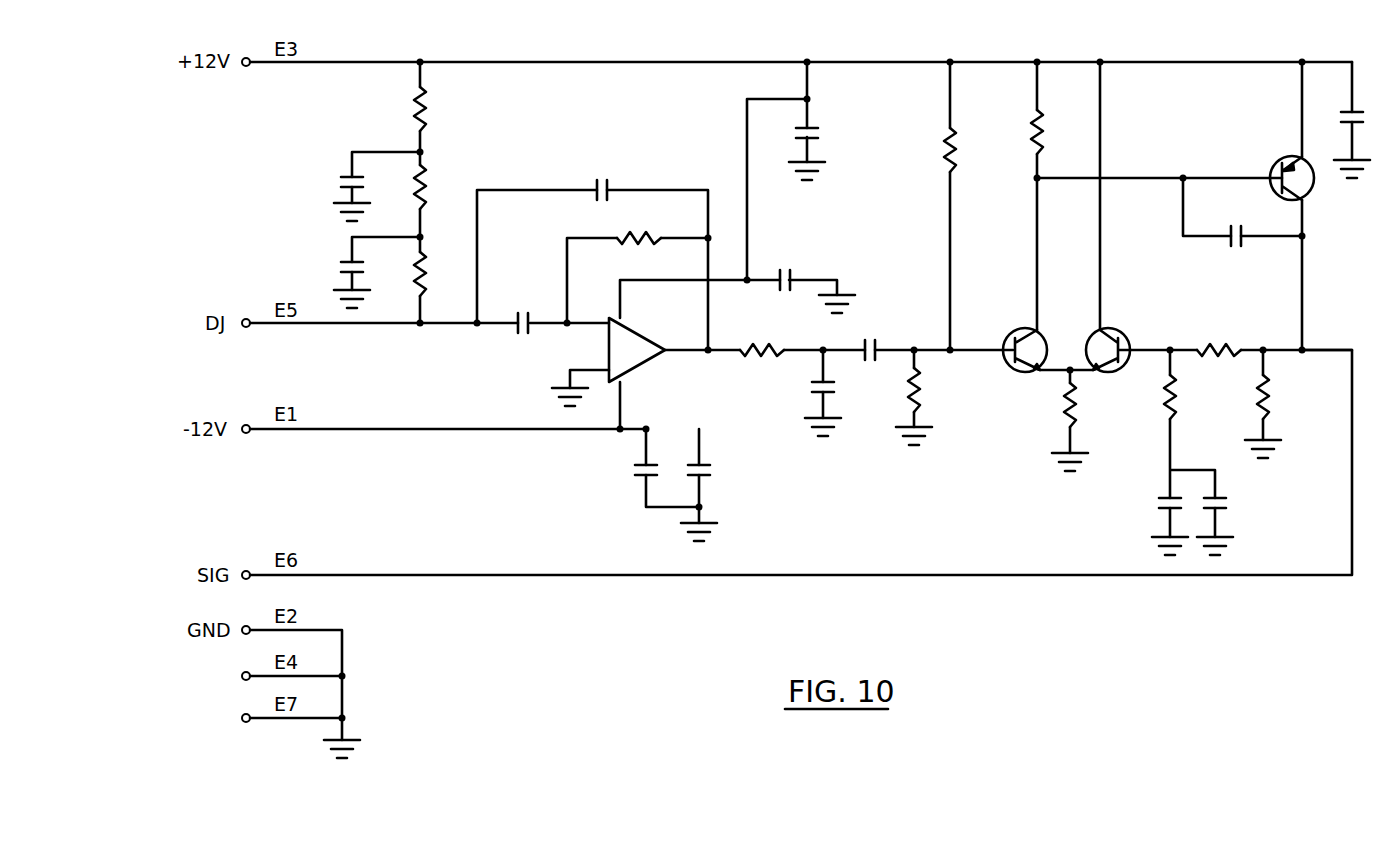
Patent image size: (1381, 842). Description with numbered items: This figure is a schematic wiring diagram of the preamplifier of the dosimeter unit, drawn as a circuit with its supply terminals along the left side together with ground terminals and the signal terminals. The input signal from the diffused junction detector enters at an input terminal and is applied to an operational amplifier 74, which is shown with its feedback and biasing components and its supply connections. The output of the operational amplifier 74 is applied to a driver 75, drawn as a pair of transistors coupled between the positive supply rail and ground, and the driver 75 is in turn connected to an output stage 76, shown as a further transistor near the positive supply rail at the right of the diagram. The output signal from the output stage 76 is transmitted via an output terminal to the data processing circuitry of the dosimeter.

The operational amplifier 74 is at (632, 366).
The driver 75 is at (1086, 334).
The output stage 76 is at (1282, 162).